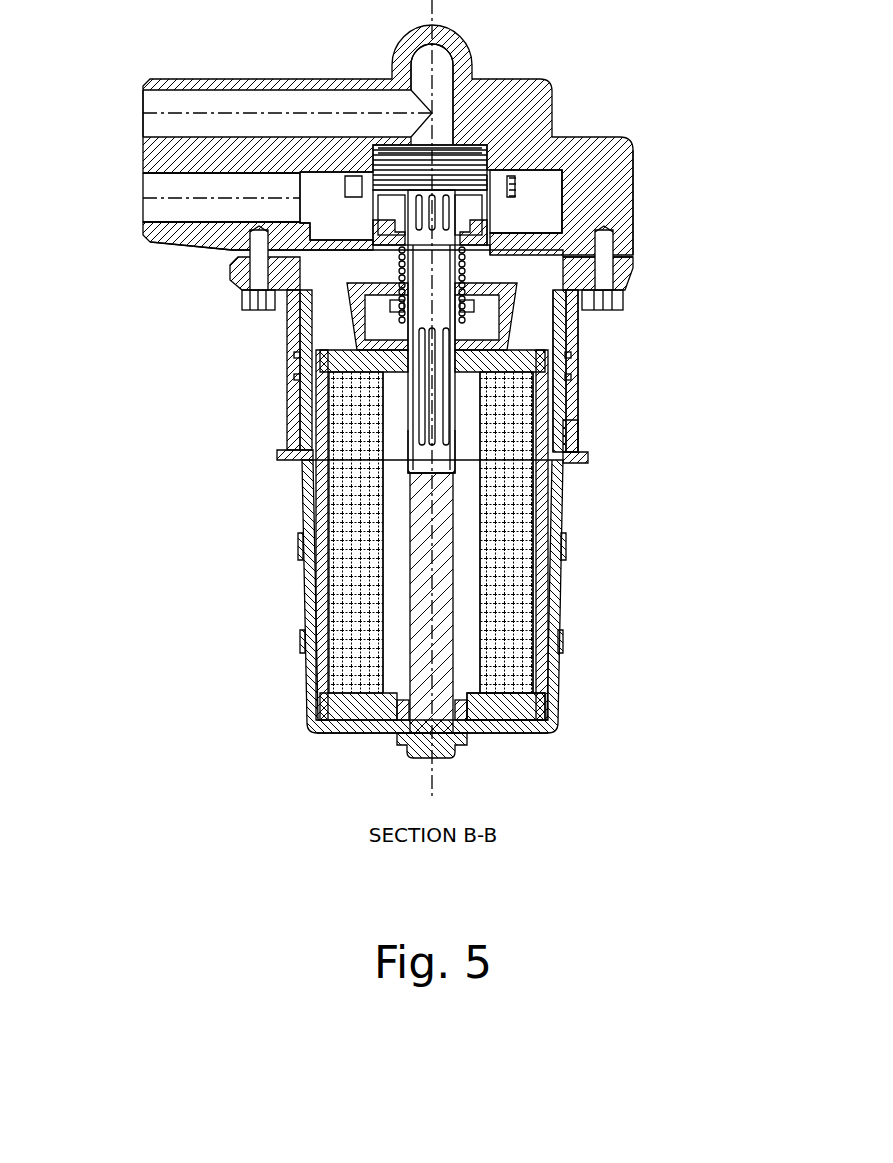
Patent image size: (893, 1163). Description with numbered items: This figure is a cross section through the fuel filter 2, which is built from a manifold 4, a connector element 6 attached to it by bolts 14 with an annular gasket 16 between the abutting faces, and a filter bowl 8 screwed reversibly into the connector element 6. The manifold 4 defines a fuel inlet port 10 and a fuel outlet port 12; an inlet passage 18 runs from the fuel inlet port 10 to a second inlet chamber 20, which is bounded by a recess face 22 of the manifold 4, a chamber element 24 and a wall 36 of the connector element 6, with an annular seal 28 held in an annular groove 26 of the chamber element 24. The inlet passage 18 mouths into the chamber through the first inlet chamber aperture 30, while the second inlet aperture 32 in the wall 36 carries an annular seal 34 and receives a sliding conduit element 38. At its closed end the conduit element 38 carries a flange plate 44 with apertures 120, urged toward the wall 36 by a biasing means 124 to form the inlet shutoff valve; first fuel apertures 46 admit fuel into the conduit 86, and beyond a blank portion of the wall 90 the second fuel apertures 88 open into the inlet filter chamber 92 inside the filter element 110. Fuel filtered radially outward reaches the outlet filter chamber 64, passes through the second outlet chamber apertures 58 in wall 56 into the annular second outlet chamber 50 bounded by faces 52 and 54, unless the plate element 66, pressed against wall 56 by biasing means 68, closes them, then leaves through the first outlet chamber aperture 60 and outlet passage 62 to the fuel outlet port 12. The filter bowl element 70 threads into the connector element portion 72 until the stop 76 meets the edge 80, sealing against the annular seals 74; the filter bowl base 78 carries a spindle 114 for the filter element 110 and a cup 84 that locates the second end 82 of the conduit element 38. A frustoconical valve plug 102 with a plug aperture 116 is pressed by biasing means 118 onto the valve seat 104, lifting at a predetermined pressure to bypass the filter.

The fuel filter 2 is at (635, 488).
The manifold 4 is at (575, 100).
The connector element 6 is at (655, 270).
The filter bowl 8 is at (578, 588).
The fuel inlet port 10 is at (143, 105).
The fuel outlet port 12 is at (160, 190).
The bolts 14 is at (623, 300).
The annular gasket 16 is at (640, 250).
The inlet passage 18 is at (201, 121).
The second inlet chamber 20 is at (489, 160).
The recess face 22 is at (373, 180).
The chamber element 24 is at (525, 200).
The annular groove 26 is at (336, 206).
The annular seal 28 is at (505, 175).
The first inlet chamber aperture 30 is at (457, 167).
The second inlet aperture 32 is at (253, 298).
The annular seal 34 is at (395, 290).
The wall 36 is at (250, 273).
The conduit element 38 is at (468, 511).
The flange plate 44 is at (395, 165).
The first fuel apertures 46 is at (425, 222).
The second outlet chamber 50 is at (200, 238).
The face 52 is at (240, 242).
The face 54 is at (305, 175).
The wall 56 is at (610, 262).
The second outlet chamber apertures 58 is at (520, 240).
The first outlet chamber aperture 60 is at (300, 183).
The outlet passage 62 is at (240, 222).
The outlet filter chamber 64 is at (297, 310).
The plate element 66 is at (550, 233).
The biasing means 68 is at (507, 187).
The filter bowl element 70 is at (557, 423).
The connector element portion 72 is at (577, 428).
The annular seals 74 is at (297, 378).
The stop 76 is at (588, 457).
The filter bowl base 78 is at (352, 735).
The edge 80 is at (577, 447).
The second end 82 is at (427, 713).
The cup 84 is at (510, 683).
The conduit 86 is at (416, 303).
The second fuel apertures 88 is at (410, 432).
The blank portion of the wall 90 is at (405, 258).
The inlet filter chamber 92 is at (386, 588).
The valve plug 102 is at (595, 312).
The valve seat 104 is at (518, 314).
The filter element 110 is at (520, 643).
The spindle 114 is at (467, 707).
The plug aperture 116 is at (462, 315).
The biasing means 118 is at (462, 267).
The apertures 120 is at (388, 145).
The biasing means 124 is at (400, 150).